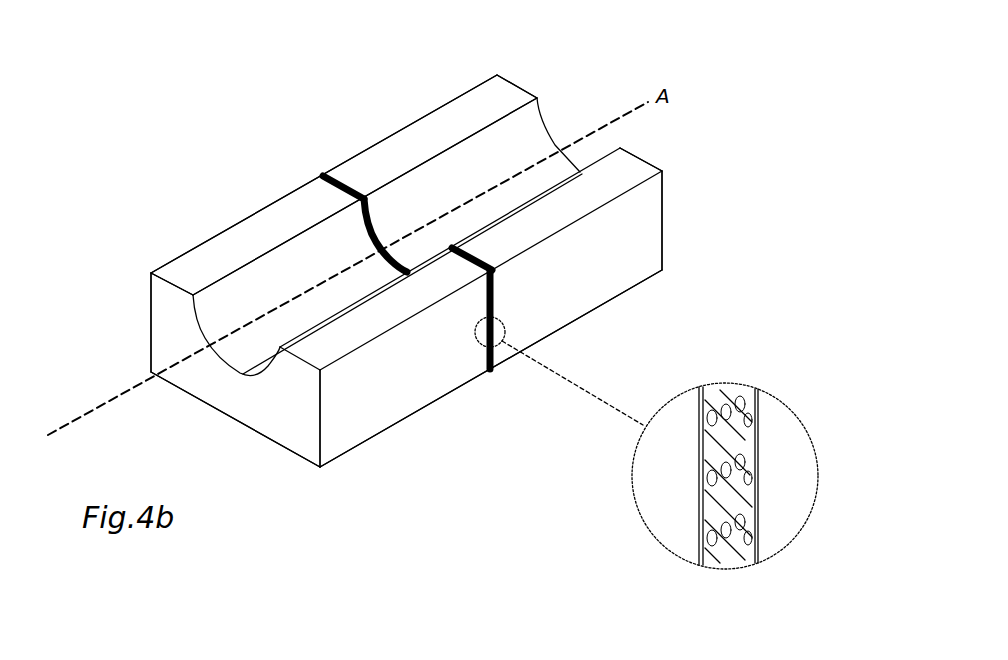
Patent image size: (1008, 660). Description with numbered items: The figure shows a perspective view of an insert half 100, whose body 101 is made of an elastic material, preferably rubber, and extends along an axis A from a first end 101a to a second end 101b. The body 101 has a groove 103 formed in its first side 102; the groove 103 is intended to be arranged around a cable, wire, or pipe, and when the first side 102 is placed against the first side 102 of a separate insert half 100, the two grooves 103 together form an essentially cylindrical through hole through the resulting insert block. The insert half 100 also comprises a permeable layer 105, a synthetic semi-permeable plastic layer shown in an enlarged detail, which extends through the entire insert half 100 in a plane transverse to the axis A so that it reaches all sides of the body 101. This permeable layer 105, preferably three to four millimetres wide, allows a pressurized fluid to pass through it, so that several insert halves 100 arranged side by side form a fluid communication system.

The insert half 100 is at (762, 299).
The body 101 is at (627, 265).
The first end 101a is at (257, 397).
The second end 101b is at (668, 200).
The first side 102 is at (217, 260).
The groove 103 is at (312, 270).
The permeable layer 105 is at (343, 178).